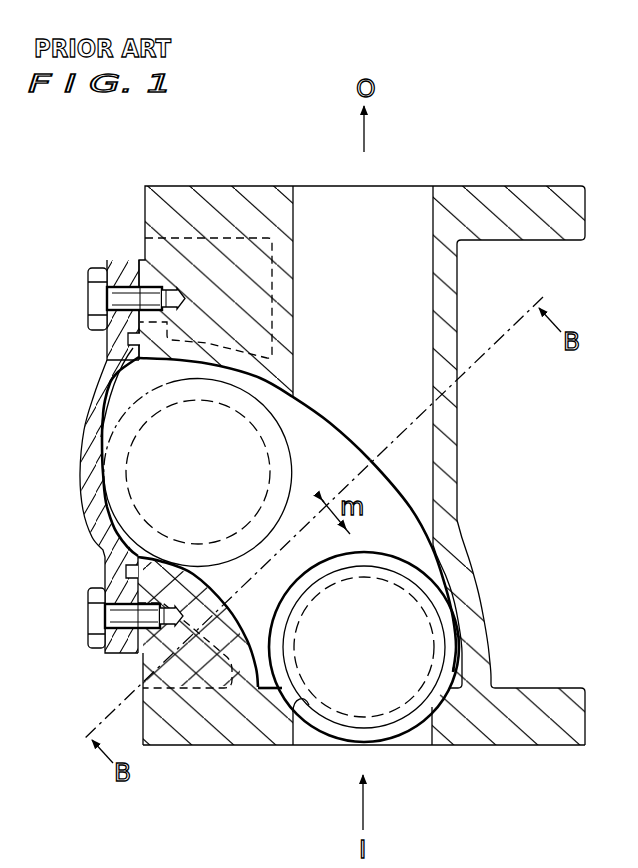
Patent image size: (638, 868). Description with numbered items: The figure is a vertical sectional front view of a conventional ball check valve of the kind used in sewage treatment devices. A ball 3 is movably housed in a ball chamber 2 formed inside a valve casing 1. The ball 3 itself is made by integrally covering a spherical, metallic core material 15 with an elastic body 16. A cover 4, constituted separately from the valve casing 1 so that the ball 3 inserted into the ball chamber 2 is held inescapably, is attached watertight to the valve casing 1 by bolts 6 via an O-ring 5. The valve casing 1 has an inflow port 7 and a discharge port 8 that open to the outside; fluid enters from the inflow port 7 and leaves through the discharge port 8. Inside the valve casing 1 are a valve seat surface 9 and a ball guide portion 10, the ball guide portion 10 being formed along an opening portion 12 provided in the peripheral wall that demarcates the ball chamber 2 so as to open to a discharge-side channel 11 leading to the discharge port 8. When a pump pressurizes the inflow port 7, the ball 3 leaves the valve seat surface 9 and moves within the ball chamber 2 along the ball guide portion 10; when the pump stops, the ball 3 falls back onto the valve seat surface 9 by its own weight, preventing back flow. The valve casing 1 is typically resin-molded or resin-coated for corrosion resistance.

The valve casing 1 is at (452, 431).
The ball chamber 2 is at (315, 468).
The ball 3 is at (105, 447).
The cover 4 is at (98, 402).
The O-ring 5 is at (128, 341).
The bolts 6 is at (92, 637).
The inflow port 7 is at (415, 746).
The discharge port 8 is at (417, 186).
The valve seat surface 9 is at (300, 700).
The ball guide portion 10 is at (437, 549).
The discharge-side channel 11 is at (418, 275).
The opening portion 12 is at (400, 487).
The core material 15 is at (407, 647).
The elastic body 16 is at (442, 677).